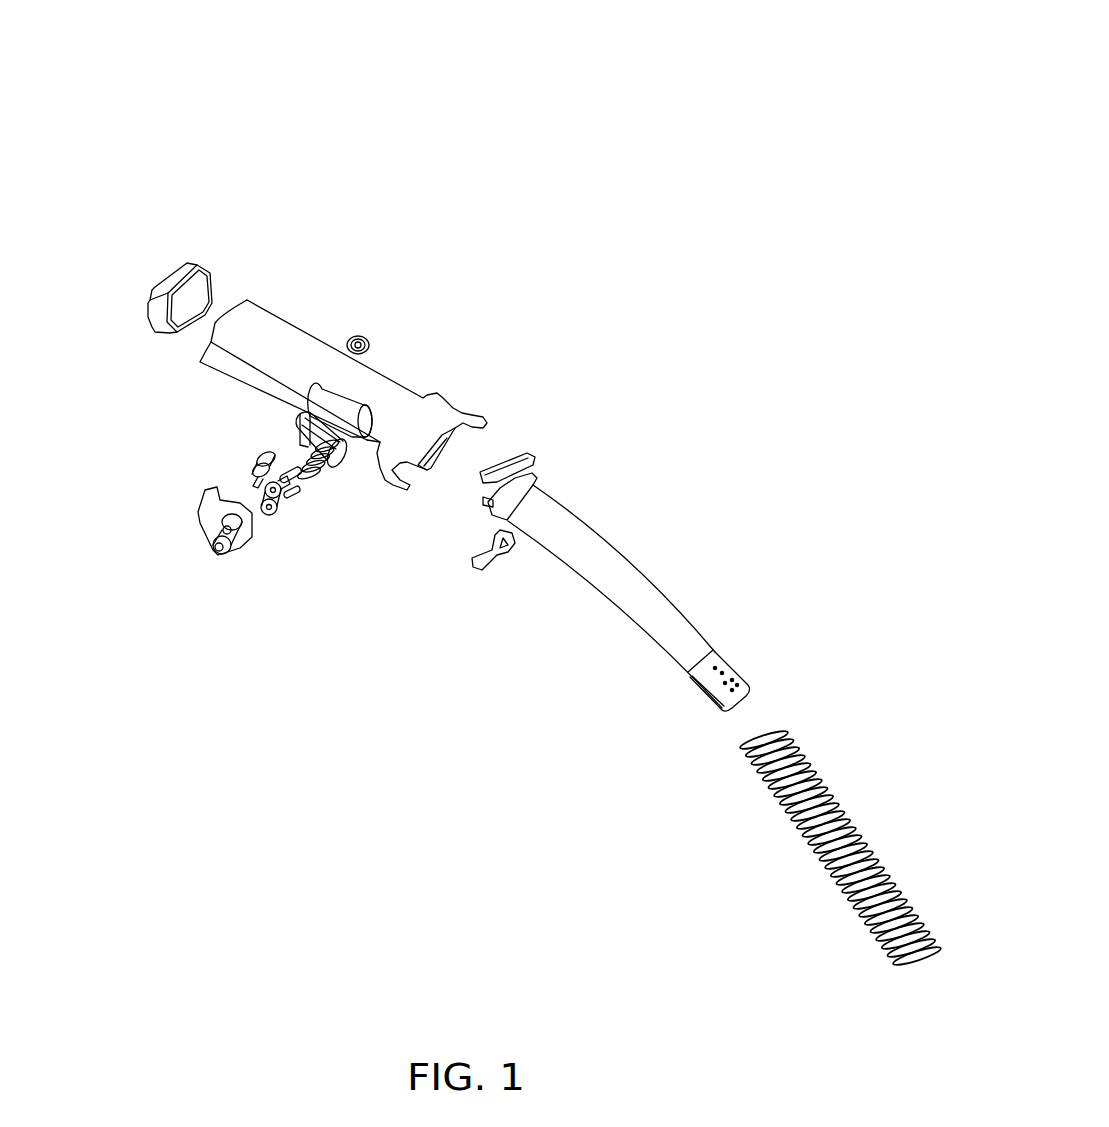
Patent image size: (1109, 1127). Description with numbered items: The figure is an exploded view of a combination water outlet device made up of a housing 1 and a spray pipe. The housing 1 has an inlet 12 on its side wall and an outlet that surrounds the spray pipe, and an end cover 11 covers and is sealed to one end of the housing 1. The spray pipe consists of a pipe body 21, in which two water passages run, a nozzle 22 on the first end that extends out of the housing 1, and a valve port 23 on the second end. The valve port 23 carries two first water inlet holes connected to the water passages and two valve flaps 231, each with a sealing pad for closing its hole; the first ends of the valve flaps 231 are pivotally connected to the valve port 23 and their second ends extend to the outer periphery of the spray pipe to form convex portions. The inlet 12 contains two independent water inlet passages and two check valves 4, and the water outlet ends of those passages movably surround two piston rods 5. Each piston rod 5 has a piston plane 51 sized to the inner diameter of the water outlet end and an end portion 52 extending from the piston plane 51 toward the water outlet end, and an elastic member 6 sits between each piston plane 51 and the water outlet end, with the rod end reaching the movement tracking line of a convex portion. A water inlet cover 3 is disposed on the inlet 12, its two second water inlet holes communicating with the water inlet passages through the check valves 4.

The housing 1 is at (320, 350).
The end cover 11 is at (188, 292).
The inlet 12 is at (357, 423).
The water inlet cover 3 is at (212, 517).
The check valve 4 is at (255, 460).
The piston rod 5 is at (277, 512).
The piston plane 51 is at (278, 510).
The end portion 52 is at (291, 465).
The elastic member 6 is at (318, 478).
The pipe body 21 is at (612, 577).
The nozzle 22 is at (720, 682).
The valve port 23 is at (532, 473).
The valve flap 231 is at (497, 552).